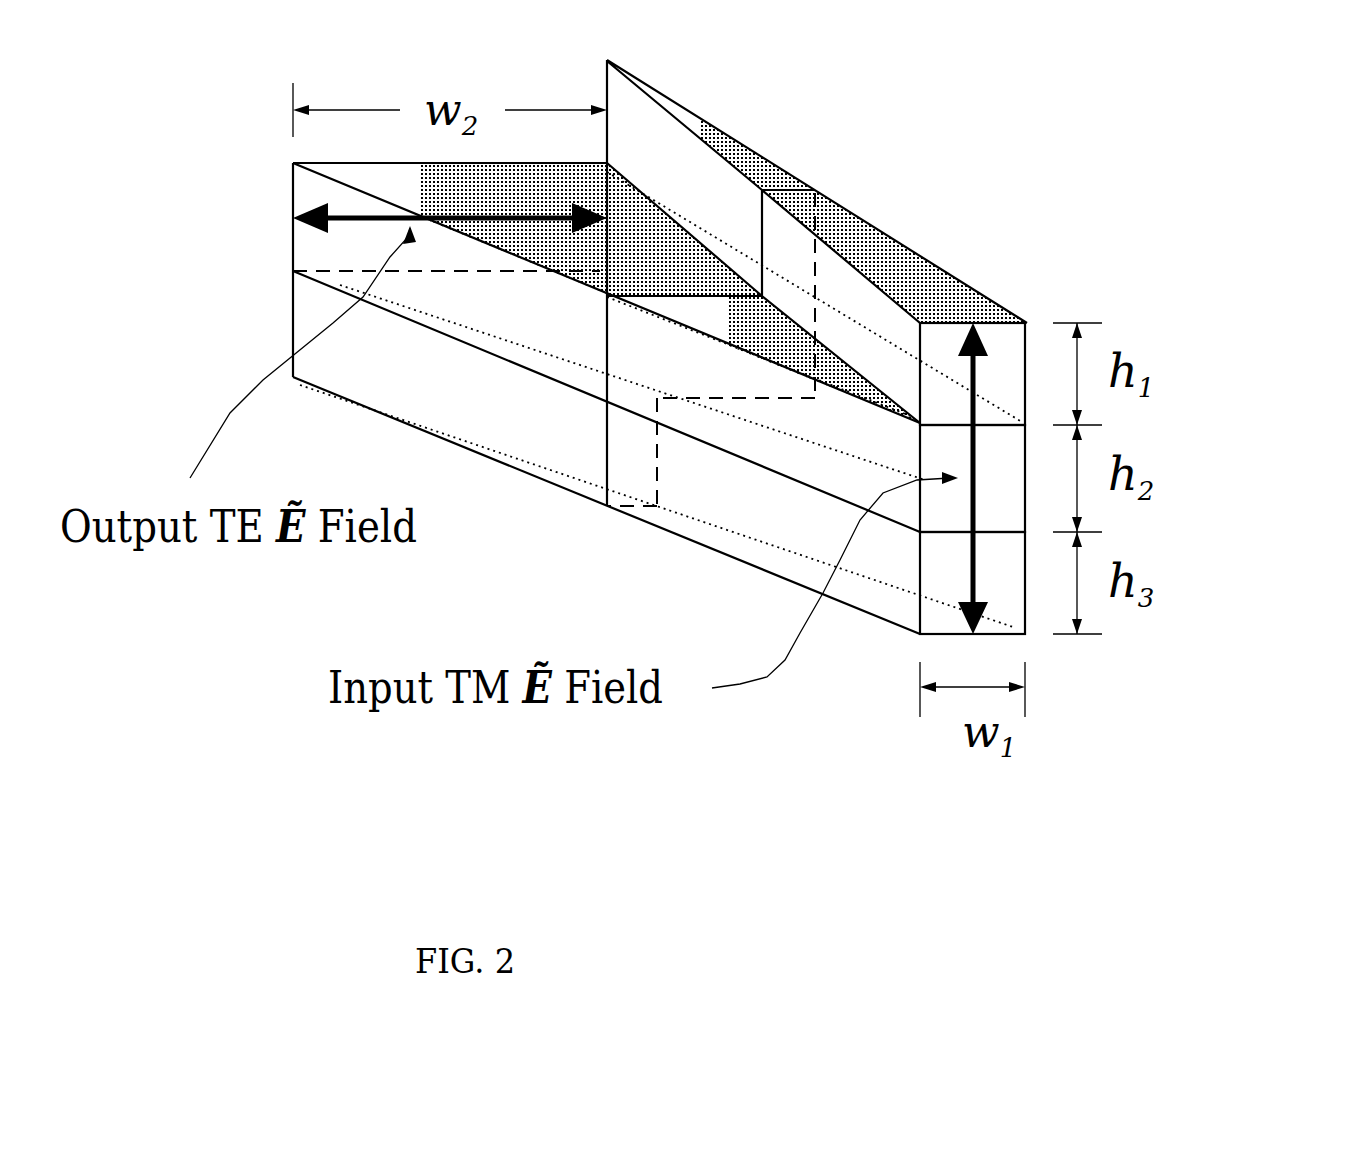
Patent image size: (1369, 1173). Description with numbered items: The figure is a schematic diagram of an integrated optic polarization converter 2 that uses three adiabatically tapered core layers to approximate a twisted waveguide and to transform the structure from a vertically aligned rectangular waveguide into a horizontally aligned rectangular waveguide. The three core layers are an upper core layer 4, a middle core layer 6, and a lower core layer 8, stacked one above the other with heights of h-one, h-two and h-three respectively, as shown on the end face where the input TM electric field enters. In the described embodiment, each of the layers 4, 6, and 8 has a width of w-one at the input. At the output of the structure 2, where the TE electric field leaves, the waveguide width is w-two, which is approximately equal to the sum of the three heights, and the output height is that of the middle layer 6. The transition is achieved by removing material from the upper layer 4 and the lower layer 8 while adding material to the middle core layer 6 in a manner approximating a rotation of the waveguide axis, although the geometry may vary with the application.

The integrated optic polarization converter 2 is at (590, 463).
The upper core layer 4 is at (980, 388).
The middle core layer 6 is at (993, 476).
The lower core layer 8 is at (995, 615).